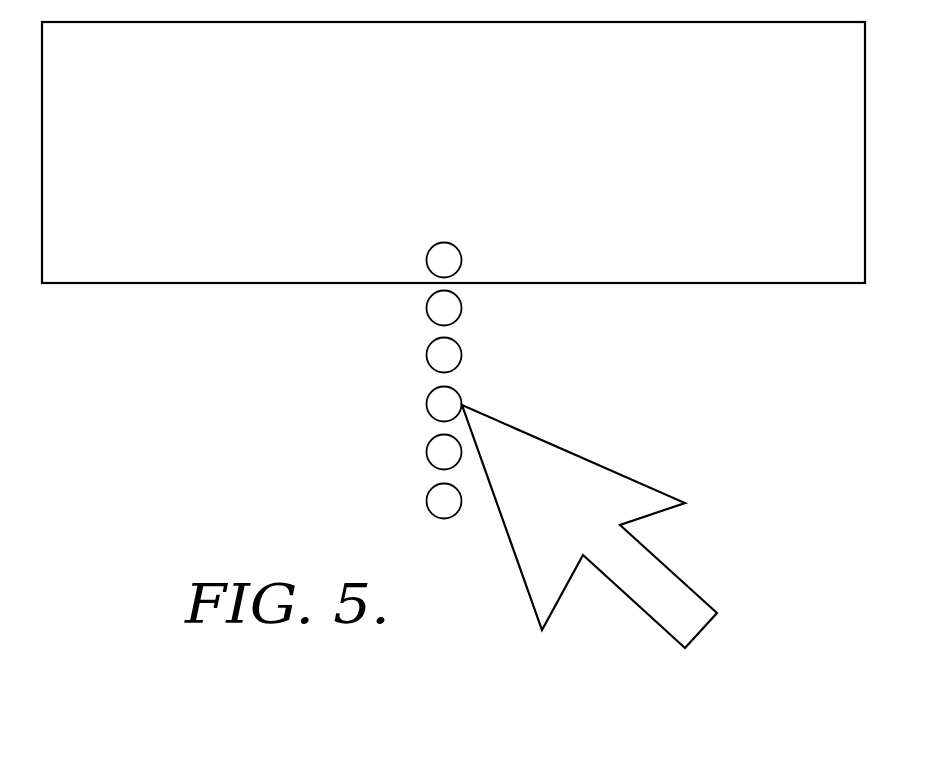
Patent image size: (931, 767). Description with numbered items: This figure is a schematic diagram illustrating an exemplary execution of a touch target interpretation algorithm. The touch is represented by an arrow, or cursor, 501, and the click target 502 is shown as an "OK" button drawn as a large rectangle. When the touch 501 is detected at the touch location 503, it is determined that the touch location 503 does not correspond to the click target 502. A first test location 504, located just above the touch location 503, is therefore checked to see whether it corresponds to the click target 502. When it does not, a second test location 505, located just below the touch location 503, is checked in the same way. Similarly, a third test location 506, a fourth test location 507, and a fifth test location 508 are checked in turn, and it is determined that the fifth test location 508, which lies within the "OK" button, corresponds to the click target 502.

The cursor 501 is at (629, 476).
The click target 502 is at (726, 283).
The touch location 503 is at (427, 404).
The first test location 504 is at (427, 355).
The second test location 505 is at (427, 452).
The third test location 506 is at (427, 308).
The fourth test location 507 is at (427, 501).
The fifth test location 508 is at (427, 260).